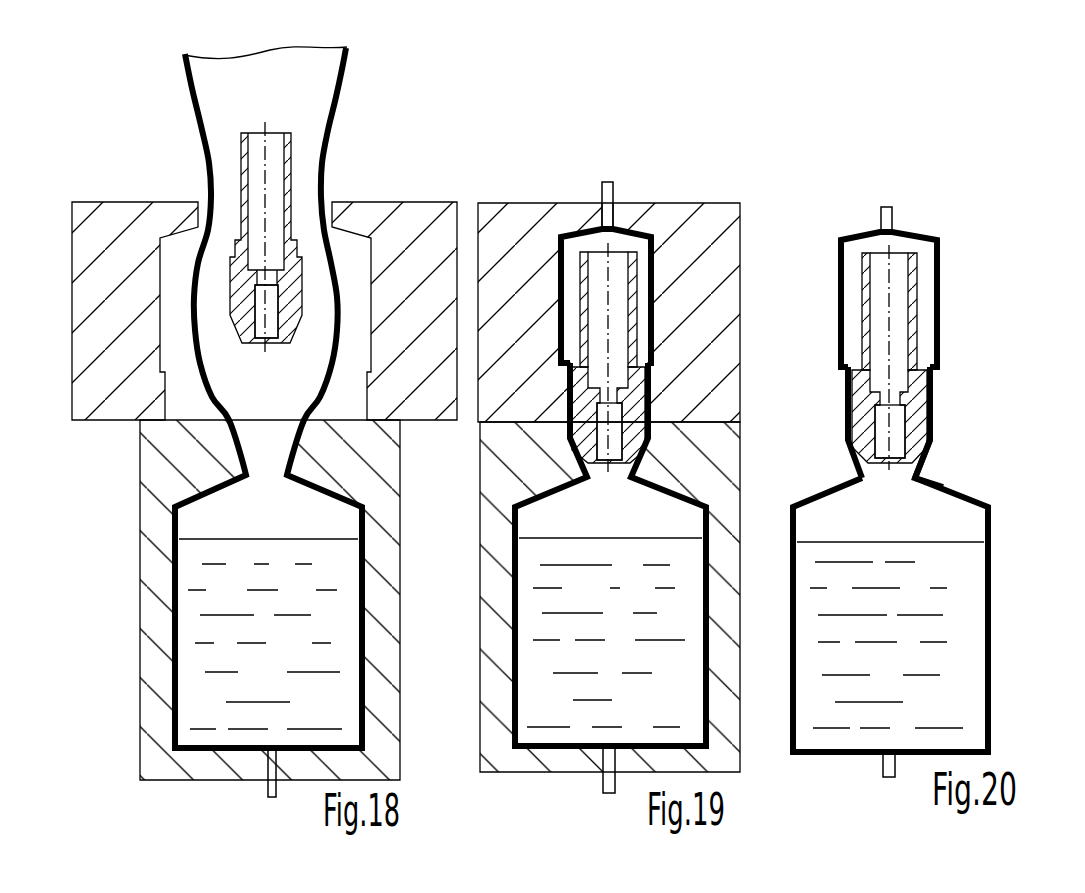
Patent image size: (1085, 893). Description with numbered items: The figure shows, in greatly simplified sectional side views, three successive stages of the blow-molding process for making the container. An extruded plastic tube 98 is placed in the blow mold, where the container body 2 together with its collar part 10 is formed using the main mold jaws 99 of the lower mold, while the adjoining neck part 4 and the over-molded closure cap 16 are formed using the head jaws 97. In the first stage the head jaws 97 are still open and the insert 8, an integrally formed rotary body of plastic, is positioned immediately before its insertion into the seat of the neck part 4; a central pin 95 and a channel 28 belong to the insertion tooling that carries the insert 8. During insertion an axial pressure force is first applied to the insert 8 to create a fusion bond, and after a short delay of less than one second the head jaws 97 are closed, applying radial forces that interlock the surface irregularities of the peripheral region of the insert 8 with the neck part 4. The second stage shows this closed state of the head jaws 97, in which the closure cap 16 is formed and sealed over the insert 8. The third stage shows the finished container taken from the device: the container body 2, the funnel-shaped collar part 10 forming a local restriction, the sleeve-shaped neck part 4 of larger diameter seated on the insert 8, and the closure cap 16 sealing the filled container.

In FIG. 19, the container body 2 is at (689, 503).
In FIG. 20, the container body 2 is at (960, 496).
In FIG. 20, the neck part 4 is at (929, 406).
In FIG. 18, the insert 8 is at (243, 297).
In FIG. 19, the insert 8 is at (634, 410).
In FIG. 20, the insert 8 is at (865, 417).
In FIG. 20, the collar part 10 is at (917, 477).
In FIG. 19, the closure cap 16 is at (656, 264).
In FIG. 20, the closure cap 16 is at (938, 300).
In FIG. 19, the channel tube 28 is at (634, 315).
In FIG. 20, the channel tube 28 is at (867, 333).
In FIG. 18, the pin 95 is at (298, 320).
In FIG. 19, the pin 95 is at (568, 438).
In FIG. 20, the pin 95 is at (855, 444).
In FIG. 18, the head jaws 97 is at (515, 148).
In FIG. 19, the head jaws 97 is at (522, 223).
In FIG. 18, the tube 98 is at (328, 120).
In FIG. 19, the tube 98 is at (606, 183).
In FIG. 18, the main mold 99 is at (161, 464).
In FIG. 19, the main mold 99 is at (610, 597).